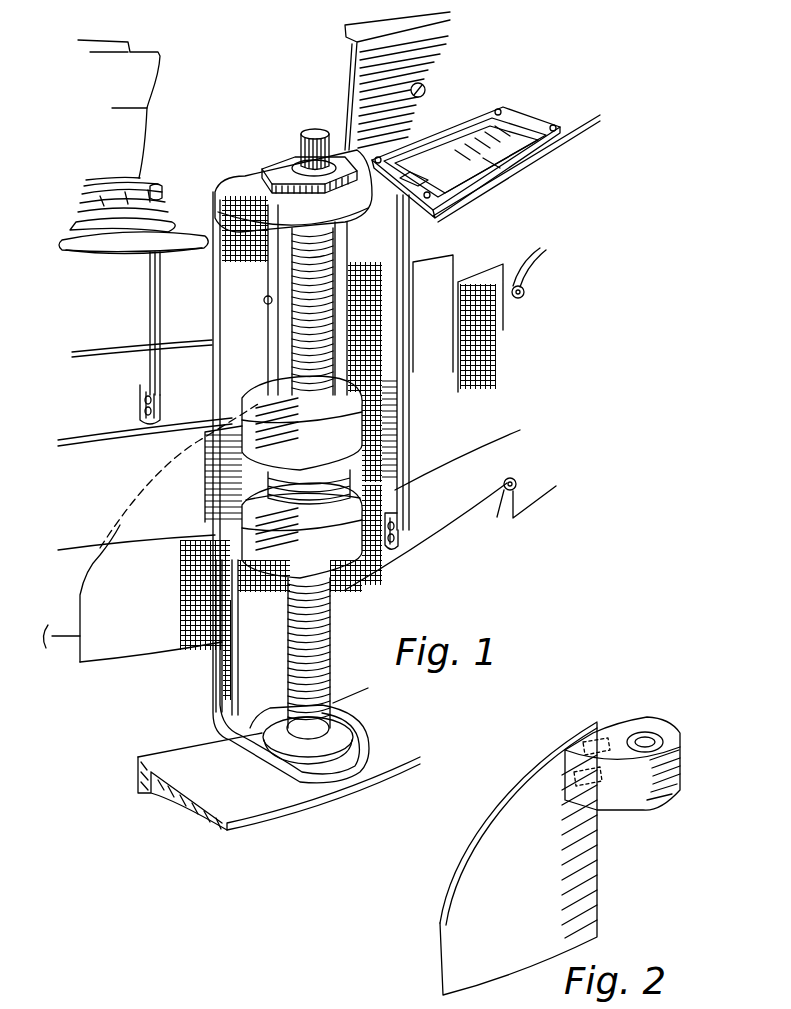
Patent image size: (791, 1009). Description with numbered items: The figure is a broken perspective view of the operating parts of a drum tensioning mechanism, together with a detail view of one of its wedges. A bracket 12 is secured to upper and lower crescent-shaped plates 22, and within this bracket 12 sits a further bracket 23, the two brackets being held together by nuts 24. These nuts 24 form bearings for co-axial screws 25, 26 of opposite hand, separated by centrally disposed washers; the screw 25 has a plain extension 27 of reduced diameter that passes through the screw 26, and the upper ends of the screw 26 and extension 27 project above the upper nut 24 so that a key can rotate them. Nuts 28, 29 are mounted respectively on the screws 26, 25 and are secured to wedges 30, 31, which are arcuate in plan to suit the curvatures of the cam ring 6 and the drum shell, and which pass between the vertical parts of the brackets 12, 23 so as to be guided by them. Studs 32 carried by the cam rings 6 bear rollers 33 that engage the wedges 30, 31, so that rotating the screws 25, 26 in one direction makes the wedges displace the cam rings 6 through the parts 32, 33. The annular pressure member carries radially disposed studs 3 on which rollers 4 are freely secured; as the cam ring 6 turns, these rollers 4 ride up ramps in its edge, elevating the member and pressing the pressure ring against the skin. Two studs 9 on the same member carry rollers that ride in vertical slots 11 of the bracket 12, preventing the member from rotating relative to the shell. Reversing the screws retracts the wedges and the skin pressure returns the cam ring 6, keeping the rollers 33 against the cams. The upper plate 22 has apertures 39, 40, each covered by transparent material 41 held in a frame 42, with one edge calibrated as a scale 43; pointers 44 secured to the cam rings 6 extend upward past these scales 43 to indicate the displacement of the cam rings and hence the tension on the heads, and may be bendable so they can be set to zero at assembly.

In FIG. 1, the radially disposed stud 3 is at (533, 298).
In FIG. 1, the roller 4 is at (504, 518).
In FIG. 1, the cam ring 6 is at (514, 320).
In FIG. 1, the stud 9 is at (272, 308).
In FIG. 1, the vertical slot 11 is at (276, 276).
In FIG. 1, the bracket 12 is at (222, 212).
In FIG. 1, the crescent-shaped plate 22 is at (132, 254).
In FIG. 1, the further bracket 23 is at (355, 260).
In FIG. 1, the nut 24 is at (290, 173).
In FIG. 1, the screw 25 is at (339, 656).
In FIG. 1, the screw 26 is at (300, 350).
In FIG. 1, the plain extension 27 is at (327, 147).
In FIG. 1, the nut 28 is at (301, 449).
In FIG. 2, the nut 28 is at (673, 734).
In FIG. 1, the nut 29 is at (281, 566).
In FIG. 1, the wedge 30 is at (140, 593).
In FIG. 2, the wedge 30 is at (518, 858).
In FIG. 1, the wedge 31 is at (458, 323).
In FIG. 1, the stud 32 is at (210, 438).
In FIG. 1, the roller 33 is at (204, 404).
In FIG. 1, the aperture 39 is at (100, 216).
In FIG. 1, the aperture 40 is at (530, 123).
In FIG. 1, the transparent material 41 is at (94, 220).
In FIG. 1, the frame 42 is at (160, 206).
In FIG. 1, the scale 43 is at (495, 168).
In FIG. 1, the pointer 44 is at (158, 310).